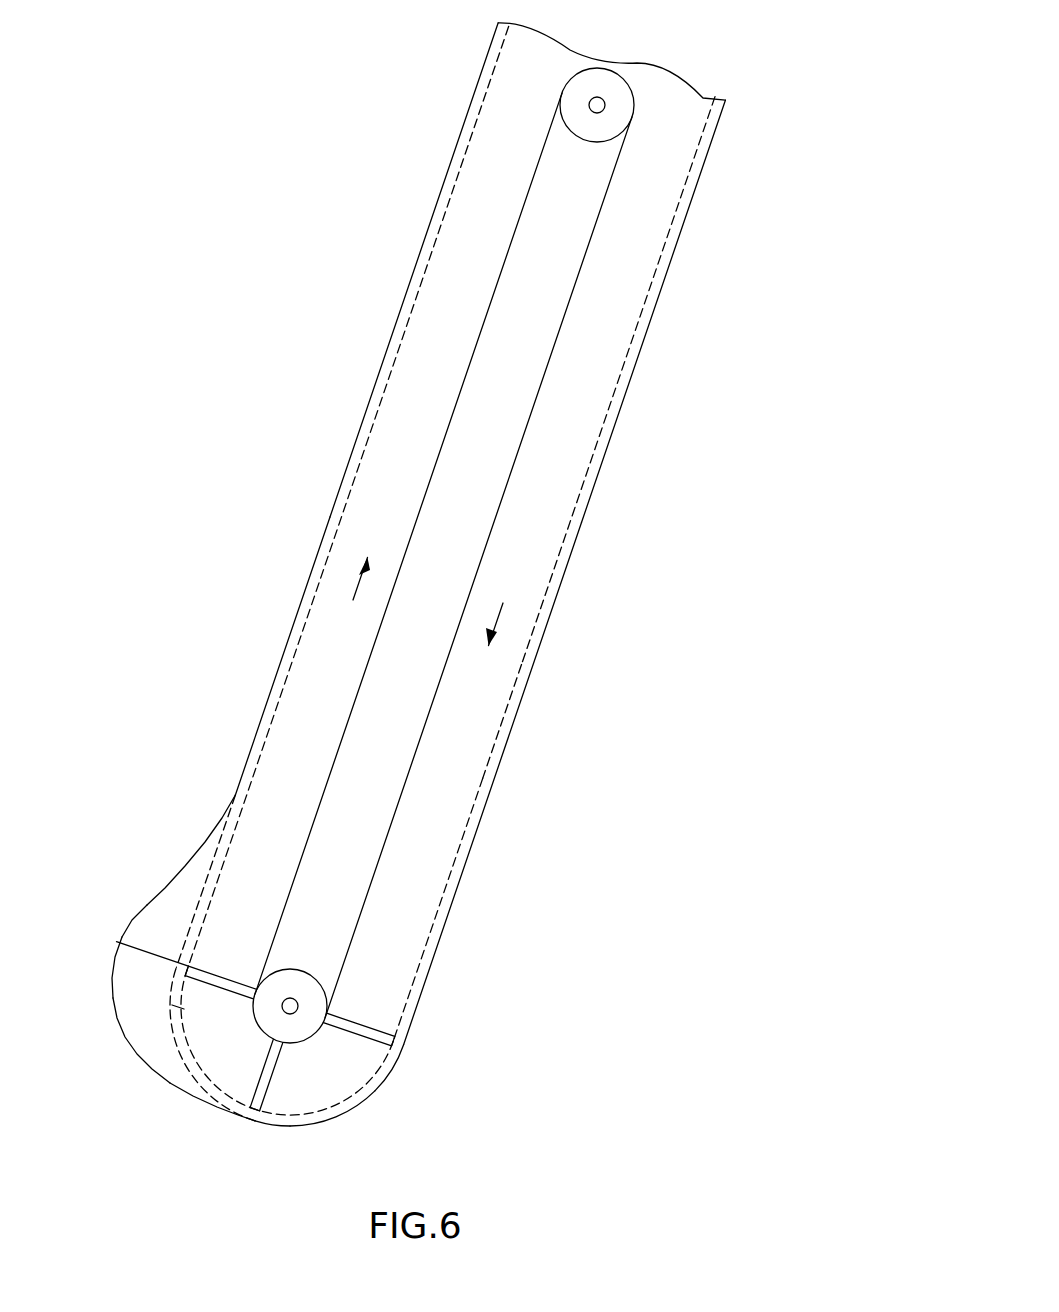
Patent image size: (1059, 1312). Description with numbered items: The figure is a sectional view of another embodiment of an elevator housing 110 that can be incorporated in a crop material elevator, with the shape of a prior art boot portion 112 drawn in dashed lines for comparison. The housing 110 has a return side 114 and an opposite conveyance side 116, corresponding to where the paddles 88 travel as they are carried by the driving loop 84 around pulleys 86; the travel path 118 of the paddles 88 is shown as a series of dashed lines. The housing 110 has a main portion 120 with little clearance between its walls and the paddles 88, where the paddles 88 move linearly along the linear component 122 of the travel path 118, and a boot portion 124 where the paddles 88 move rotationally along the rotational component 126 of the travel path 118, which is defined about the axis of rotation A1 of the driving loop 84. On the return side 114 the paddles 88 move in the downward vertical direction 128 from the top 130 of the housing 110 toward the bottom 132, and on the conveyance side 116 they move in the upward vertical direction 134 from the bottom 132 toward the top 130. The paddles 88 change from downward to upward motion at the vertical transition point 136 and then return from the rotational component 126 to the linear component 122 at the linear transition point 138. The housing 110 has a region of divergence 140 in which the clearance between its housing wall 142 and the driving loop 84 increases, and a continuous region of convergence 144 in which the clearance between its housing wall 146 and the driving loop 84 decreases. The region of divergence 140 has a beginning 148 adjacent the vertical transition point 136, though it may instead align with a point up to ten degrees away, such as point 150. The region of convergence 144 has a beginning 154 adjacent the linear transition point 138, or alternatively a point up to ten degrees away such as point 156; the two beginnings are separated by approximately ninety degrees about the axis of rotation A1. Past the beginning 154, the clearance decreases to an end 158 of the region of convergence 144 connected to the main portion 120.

The driving loop 84 is at (496, 291).
The pulley 86 is at (599, 68).
The paddles 88 is at (222, 972).
The axis of rotation A1 is at (290, 998).
The housing 110 is at (568, 572).
The prior art boot portion 112 is at (165, 970).
The return side 114 is at (610, 440).
The conveyance side 116 is at (366, 410).
The travel path 118 is at (478, 792).
The main portion 120 is at (633, 370).
The linear component 122 is at (451, 533).
The boot portion 124 is at (392, 1072).
The rotational component 126 is at (348, 1095).
The downward vertical direction 128 is at (503, 612).
The top 130 is at (682, 80).
The bottom 132 is at (362, 1103).
The upward vertical direction 134 is at (353, 592).
The vertical transition point 136 is at (256, 1122).
The linear transition point 138 is at (195, 967).
The region of divergence 140 is at (162, 1078).
The housing wall 142 is at (225, 1098).
The region of convergence 144 is at (172, 883).
The housing wall 146 is at (150, 905).
The beginning 148 is at (254, 1118).
The point 150 is at (285, 1122).
The beginning 154 is at (120, 928).
The point 156 is at (178, 1007).
The end 158 is at (249, 753).